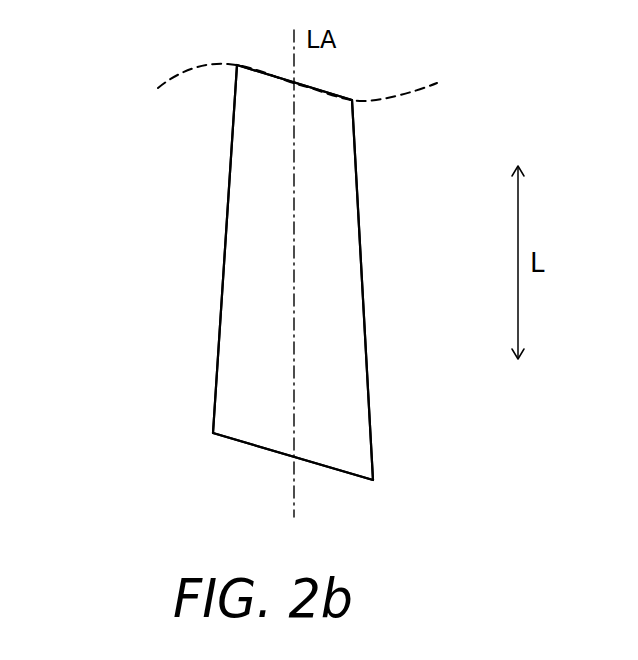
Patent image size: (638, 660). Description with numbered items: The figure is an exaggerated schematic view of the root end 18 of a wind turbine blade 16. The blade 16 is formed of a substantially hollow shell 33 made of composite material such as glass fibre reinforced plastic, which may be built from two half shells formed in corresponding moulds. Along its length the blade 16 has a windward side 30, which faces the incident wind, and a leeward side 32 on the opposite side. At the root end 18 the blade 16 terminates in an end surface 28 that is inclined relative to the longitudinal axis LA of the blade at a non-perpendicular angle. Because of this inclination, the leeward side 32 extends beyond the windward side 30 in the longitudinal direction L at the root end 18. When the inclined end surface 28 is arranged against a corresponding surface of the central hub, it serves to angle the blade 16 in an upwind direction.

The wind turbine blade 16 is at (132, 222).
The root end 18 is at (329, 414).
The end surface 28 is at (362, 478).
The windward side 30 is at (219, 282).
The leeward side 32 is at (366, 223).
The shell 33 is at (320, 167).